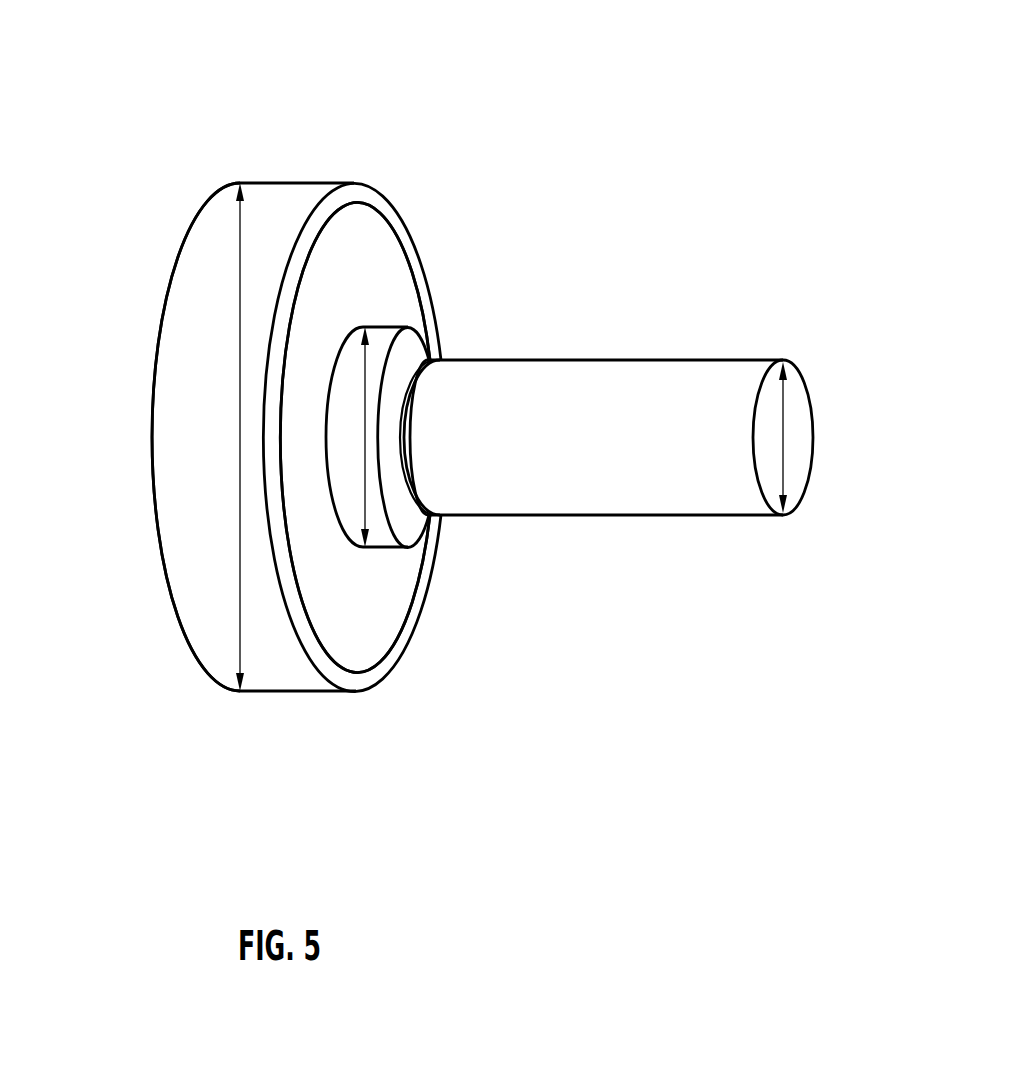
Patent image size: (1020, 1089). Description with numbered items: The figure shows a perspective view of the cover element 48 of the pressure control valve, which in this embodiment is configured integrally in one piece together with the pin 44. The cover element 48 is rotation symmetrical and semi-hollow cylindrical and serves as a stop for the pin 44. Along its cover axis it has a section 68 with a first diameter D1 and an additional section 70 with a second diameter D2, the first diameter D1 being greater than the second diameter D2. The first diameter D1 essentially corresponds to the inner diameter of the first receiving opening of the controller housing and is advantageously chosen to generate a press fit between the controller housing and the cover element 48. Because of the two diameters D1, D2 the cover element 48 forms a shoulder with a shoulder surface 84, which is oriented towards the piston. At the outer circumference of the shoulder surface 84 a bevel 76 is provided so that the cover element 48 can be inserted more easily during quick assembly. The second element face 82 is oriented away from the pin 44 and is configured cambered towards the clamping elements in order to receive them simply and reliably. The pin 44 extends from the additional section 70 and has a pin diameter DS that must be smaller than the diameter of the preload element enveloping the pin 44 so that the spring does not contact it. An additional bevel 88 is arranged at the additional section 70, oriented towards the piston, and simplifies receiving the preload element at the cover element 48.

The cover element 48 is at (263, 423).
The pin 44 is at (653, 428).
The second element face 82 is at (145, 404).
The shoulder surface 84 is at (403, 263).
The section 68 is at (268, 654).
The bevel 76 is at (339, 673).
The additional section 70 is at (383, 537).
The additional bevel 88 is at (418, 527).
The first diameter D1 is at (240, 437).
The second diameter D2 is at (367, 437).
The pin diameter DS is at (783, 437).